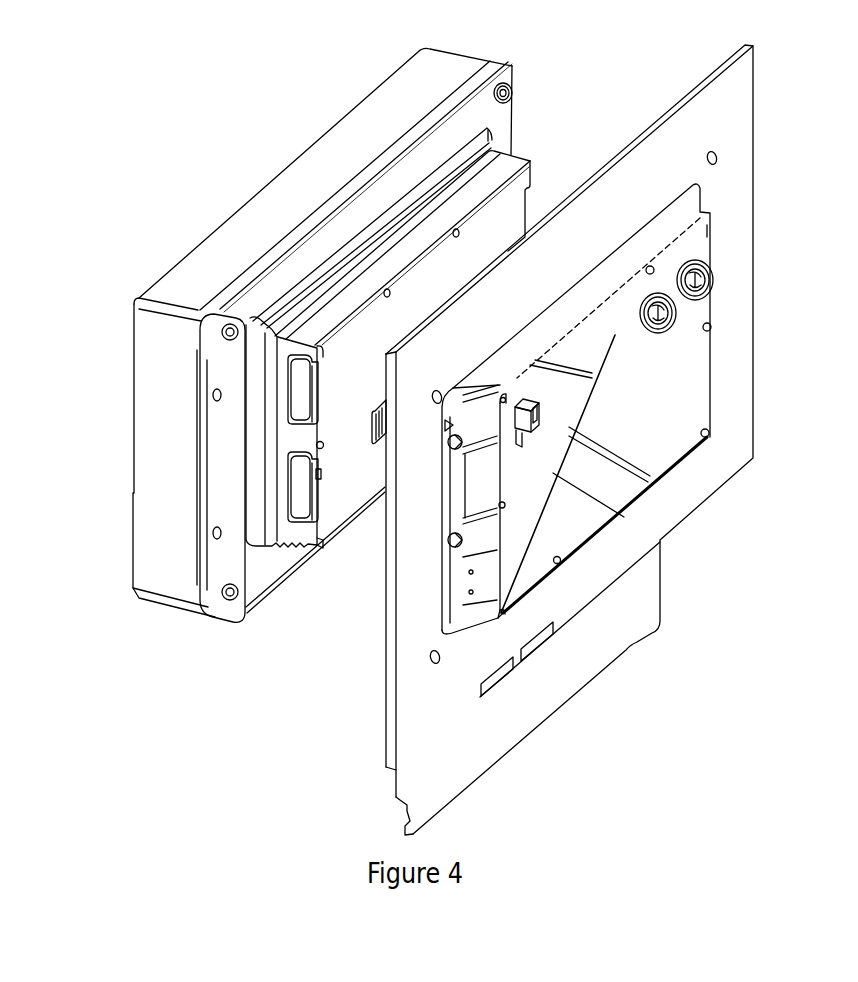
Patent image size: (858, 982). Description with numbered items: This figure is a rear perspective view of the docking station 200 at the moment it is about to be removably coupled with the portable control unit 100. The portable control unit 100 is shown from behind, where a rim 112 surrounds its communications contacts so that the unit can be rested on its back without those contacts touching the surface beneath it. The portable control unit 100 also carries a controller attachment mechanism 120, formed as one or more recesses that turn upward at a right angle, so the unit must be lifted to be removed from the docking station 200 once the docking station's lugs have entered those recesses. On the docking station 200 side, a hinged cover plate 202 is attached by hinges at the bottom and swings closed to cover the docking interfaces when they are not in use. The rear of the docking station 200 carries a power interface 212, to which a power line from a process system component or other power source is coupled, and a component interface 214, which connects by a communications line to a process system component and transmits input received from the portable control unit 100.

The portable control unit 100 is at (252, 197).
The rim 112 is at (532, 184).
The controller attachment mechanism 120 is at (317, 490).
The docking station 200 is at (728, 480).
The hinged cover plate 202 is at (396, 798).
The power interface 212 is at (535, 433).
The component interface 214 is at (668, 337).